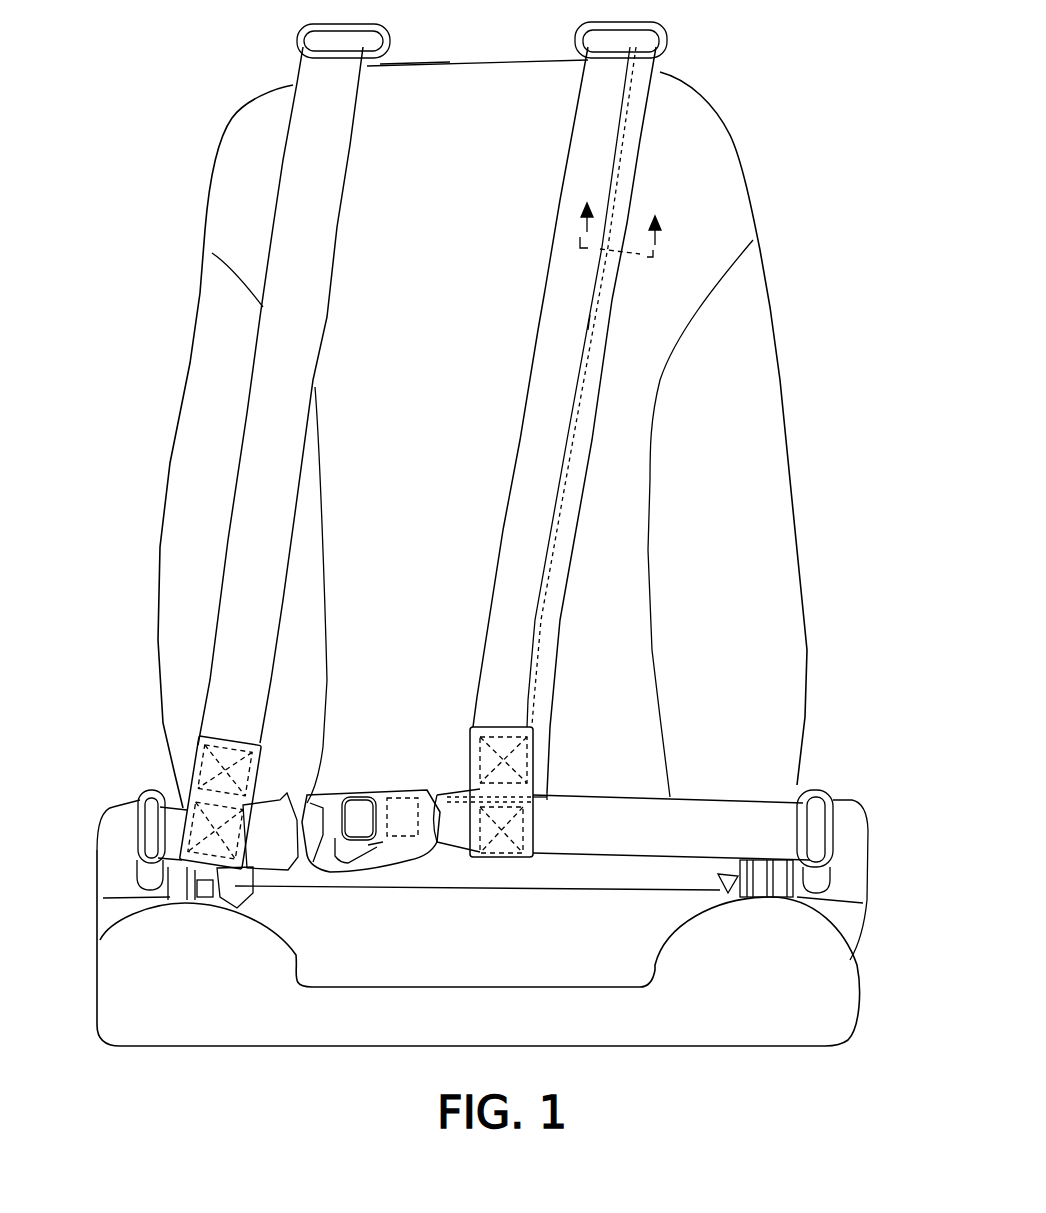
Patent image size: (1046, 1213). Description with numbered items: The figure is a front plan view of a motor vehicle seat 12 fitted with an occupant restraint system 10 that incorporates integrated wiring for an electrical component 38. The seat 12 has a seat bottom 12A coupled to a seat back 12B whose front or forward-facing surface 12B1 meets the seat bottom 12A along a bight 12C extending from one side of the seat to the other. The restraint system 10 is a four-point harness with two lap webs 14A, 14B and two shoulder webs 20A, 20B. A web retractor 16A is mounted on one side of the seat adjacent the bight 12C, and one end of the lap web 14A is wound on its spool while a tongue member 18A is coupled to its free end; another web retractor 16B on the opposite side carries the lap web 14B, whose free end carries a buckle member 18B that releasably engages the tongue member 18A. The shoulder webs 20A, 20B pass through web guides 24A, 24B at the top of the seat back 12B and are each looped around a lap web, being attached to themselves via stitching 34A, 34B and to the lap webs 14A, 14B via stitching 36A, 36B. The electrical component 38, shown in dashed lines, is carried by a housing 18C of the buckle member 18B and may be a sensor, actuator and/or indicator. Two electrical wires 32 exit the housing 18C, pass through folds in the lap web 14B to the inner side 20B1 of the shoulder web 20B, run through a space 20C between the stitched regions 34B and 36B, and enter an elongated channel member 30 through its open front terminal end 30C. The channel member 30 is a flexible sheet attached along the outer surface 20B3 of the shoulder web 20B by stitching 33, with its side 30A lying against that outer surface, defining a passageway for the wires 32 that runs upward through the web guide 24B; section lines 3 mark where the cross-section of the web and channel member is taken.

The occupant restraint system 10 is at (205, 516).
The motor vehicle seat 12 is at (812, 420).
The seat bottom 12A is at (503, 960).
The seat back 12B is at (760, 190).
The front or forward-facing surface 12B1 is at (404, 239).
The bight 12C is at (480, 888).
The lap web 14A is at (172, 803).
The lap web 14B is at (715, 803).
The web retractor 16A is at (118, 806).
The web retractor 16B is at (834, 798).
The tongue member 18A is at (292, 870).
The buckle member 18B is at (358, 856).
The housing 18C is at (395, 850).
The shoulder web 20A is at (335, 147).
The shoulder web 20B is at (590, 105).
The inner side of the shoulder web 20B1 is at (498, 530).
The outer surface of the shoulder web 20B3 is at (562, 290).
The space 20C is at (480, 790).
The web guide 24A is at (296, 42).
The web guide 24B is at (668, 42).
The elongated channel member 30 is at (648, 97).
The side of the channel member 30A is at (572, 385).
The open front terminal end 30C is at (545, 790).
The electrical wires 32 is at (525, 800).
The stitching 33 is at (627, 147).
The stitching 34A is at (232, 755).
The stitching 34B is at (505, 732).
The stitching 36A is at (210, 865).
The stitching 36B is at (505, 852).
The electrical component 38 is at (400, 798).
The section lines 3- 3 is at (622, 217).